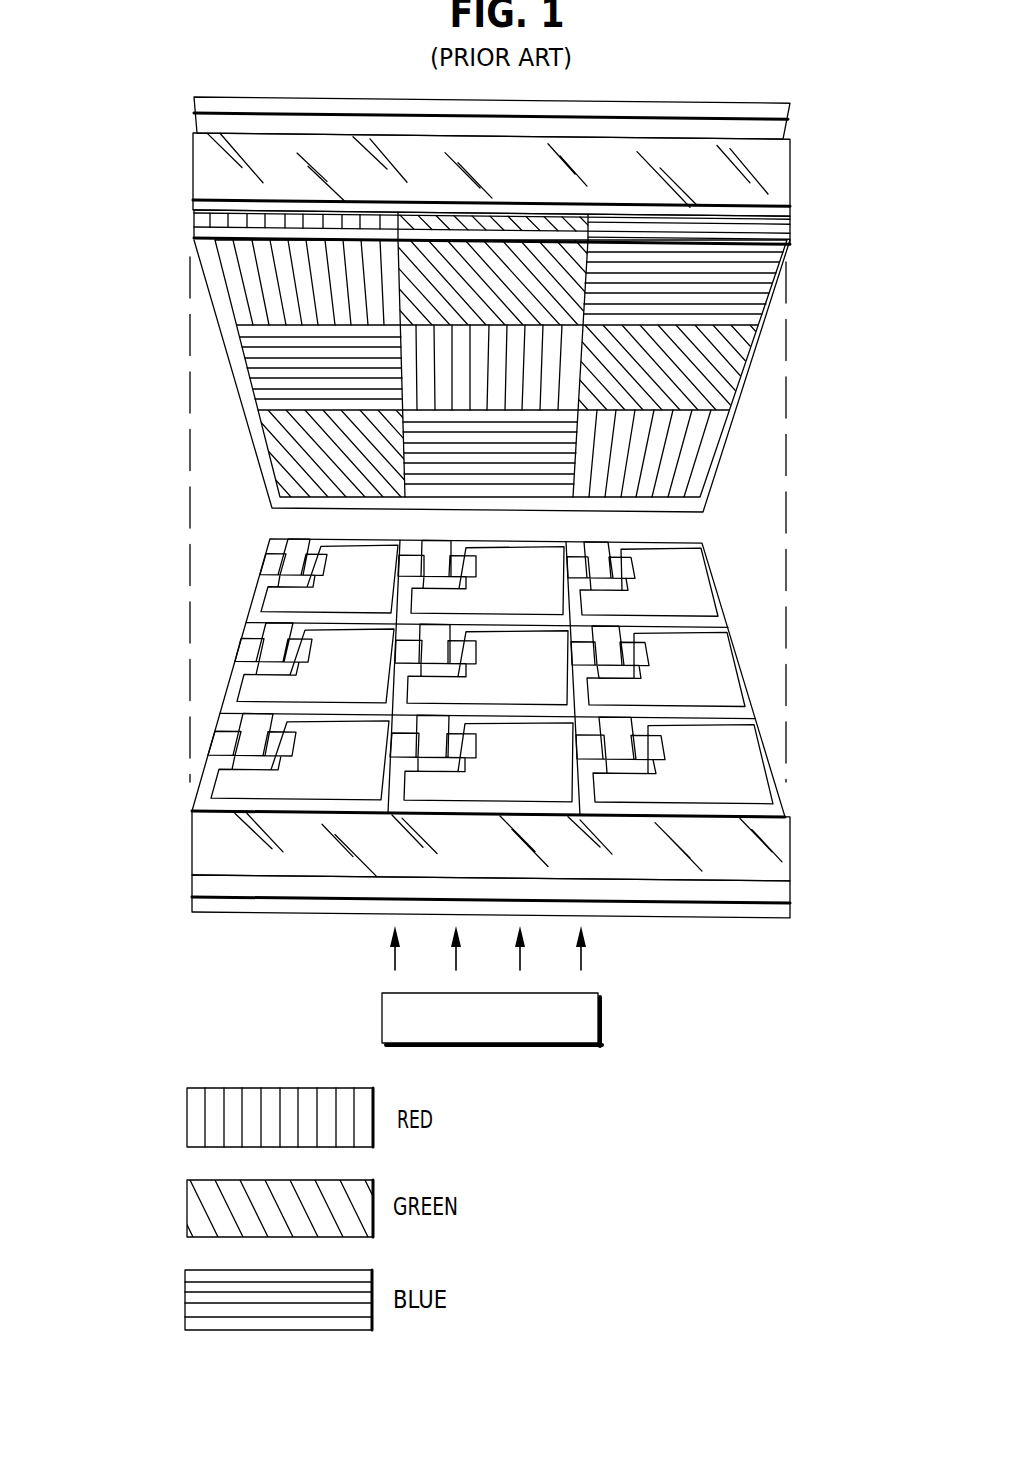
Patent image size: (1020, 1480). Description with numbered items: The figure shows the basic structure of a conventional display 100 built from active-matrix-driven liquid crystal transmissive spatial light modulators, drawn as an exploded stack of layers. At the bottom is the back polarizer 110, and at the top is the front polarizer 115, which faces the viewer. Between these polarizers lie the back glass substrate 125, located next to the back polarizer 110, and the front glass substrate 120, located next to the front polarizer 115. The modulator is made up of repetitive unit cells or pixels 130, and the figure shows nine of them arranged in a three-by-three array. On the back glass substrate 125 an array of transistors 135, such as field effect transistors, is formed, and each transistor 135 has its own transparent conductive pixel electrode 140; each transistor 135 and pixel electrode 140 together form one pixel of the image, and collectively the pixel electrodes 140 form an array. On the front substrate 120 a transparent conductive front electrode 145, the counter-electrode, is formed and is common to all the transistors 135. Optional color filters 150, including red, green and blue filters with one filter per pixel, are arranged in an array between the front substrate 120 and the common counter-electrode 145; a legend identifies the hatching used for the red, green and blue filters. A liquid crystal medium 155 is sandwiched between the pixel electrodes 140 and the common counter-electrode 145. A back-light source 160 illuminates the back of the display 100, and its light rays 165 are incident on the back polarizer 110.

The display 100 is at (714, 984).
The back polarizer 110 is at (243, 902).
The front polarizer 115 is at (200, 102).
The front glass substrate 120 is at (207, 162).
The back glass substrate 125 is at (205, 843).
The pixels 130 is at (526, 667).
The transistor 135 is at (636, 650).
The pixel electrode 140 is at (702, 681).
The front electrode 145 is at (196, 229).
The color filters 150 is at (195, 217).
The liquid crystal medium 155 is at (230, 483).
The back-light source 160 is at (603, 1022).
The light rays 165 is at (583, 957).